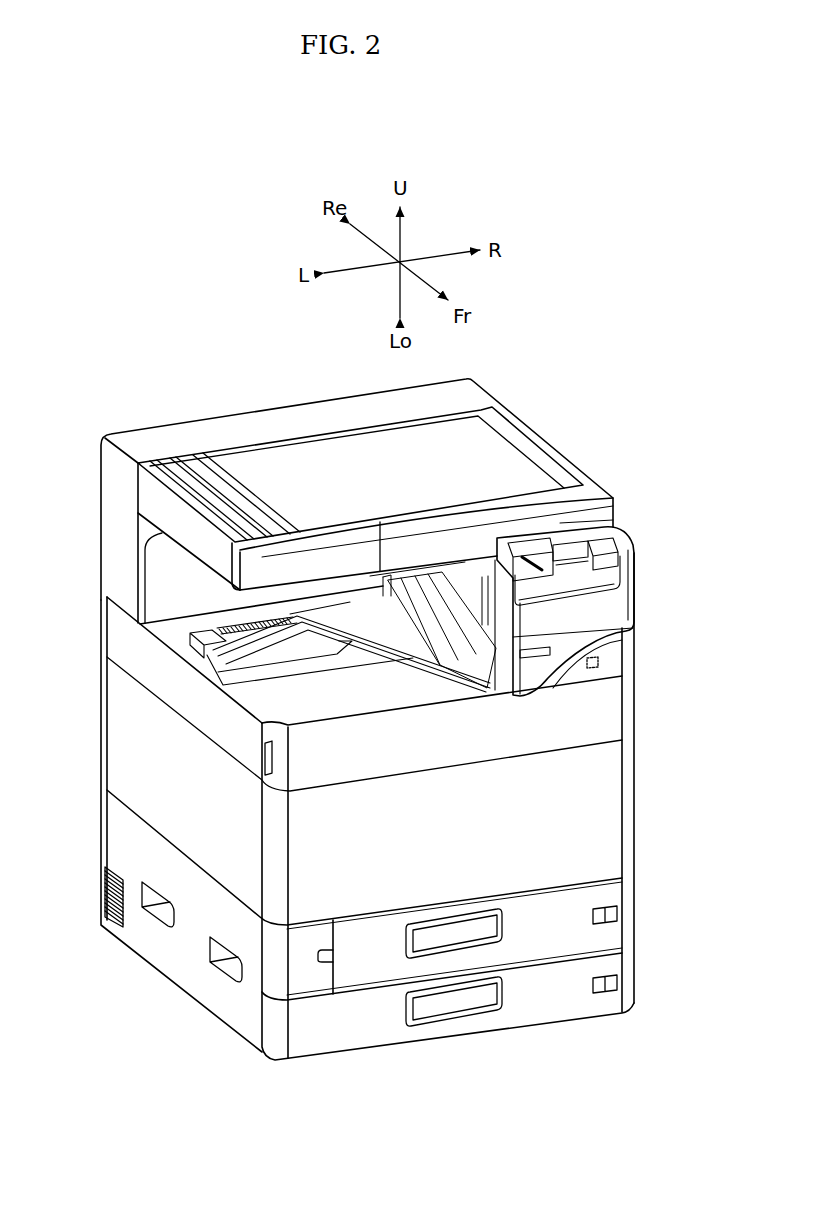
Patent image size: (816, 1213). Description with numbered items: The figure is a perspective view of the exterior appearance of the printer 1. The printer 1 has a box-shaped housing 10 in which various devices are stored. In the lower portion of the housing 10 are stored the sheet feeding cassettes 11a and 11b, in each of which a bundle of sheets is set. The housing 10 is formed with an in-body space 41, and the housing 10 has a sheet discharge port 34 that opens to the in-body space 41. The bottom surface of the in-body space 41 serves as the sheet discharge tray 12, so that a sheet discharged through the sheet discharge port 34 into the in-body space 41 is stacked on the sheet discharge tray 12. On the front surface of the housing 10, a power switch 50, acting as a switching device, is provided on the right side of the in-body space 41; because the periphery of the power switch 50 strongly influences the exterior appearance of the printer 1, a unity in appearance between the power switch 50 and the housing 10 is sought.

The printer 1 is at (118, 402).
The housing 10 is at (180, 753).
The sheet feeding cassette 11a is at (580, 1005).
The sheet feeding cassette 11b is at (582, 940).
The sheet discharge tray 12 is at (418, 690).
The sheet discharge port 34 is at (453, 589).
The in-body space 41 is at (180, 597).
The power switch 50 is at (593, 668).